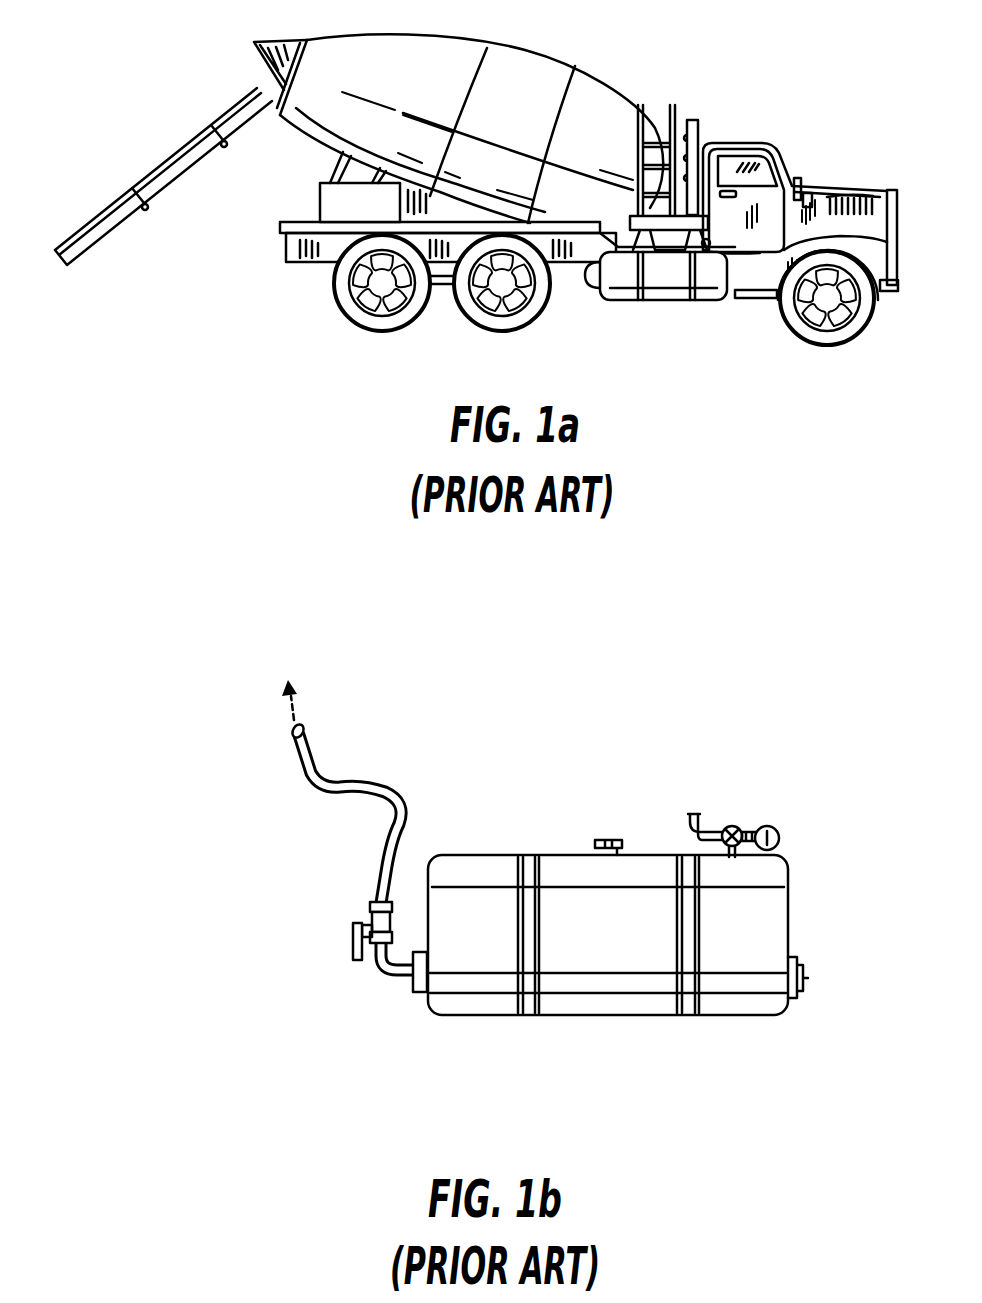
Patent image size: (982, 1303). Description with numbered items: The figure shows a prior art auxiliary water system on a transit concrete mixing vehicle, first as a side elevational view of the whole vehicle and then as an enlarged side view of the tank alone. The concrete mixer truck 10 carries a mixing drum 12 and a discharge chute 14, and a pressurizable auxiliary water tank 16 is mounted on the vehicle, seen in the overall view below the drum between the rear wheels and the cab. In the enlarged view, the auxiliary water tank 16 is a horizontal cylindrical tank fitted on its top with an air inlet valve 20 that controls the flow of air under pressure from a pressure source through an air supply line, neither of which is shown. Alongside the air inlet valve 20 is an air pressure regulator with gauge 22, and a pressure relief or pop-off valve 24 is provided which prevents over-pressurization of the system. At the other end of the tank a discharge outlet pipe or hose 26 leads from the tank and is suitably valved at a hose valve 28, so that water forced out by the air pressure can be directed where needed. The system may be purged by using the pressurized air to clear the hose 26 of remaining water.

In FIG. 1A, the concrete mixer truck 10 is at (744, 43).
In FIG. 1A, the mixing drum 12 is at (412, 36).
In FIG. 1A, the discharge chute 14 is at (165, 160).
In FIG. 1A, the auxiliary water tank 16 is at (657, 300).
In FIG. 1B, the auxiliary water tank 16 is at (790, 922).
In FIG. 1B, the air inlet valve 20 is at (729, 823).
In FIG. 1B, the air pressure regulator with gauge 22 is at (780, 838).
In FIG. 1B, the pressure relief valve 24 is at (698, 826).
In FIG. 1B, the discharge outlet hose 26 is at (322, 786).
In FIG. 1B, the hose valve 28 is at (372, 917).